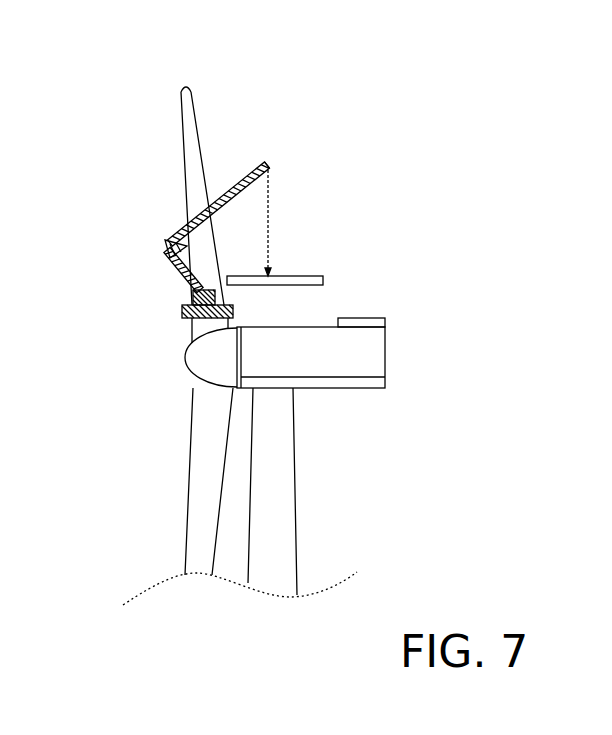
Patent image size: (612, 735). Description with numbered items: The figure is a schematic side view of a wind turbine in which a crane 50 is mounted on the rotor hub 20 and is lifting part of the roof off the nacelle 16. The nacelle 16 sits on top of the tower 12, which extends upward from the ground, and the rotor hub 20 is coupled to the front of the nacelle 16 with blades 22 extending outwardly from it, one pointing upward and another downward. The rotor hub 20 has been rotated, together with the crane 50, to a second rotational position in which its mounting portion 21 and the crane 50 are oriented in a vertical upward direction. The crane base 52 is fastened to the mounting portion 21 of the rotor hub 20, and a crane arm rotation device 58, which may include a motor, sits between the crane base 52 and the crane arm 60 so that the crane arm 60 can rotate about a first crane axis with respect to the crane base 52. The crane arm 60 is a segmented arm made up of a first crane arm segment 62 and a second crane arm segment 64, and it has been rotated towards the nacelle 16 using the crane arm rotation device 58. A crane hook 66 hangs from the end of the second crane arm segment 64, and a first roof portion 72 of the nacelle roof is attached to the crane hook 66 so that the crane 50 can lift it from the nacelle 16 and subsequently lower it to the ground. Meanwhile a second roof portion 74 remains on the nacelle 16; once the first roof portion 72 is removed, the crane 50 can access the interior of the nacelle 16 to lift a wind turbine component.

The tower 12 is at (297, 545).
The nacelle 16 is at (387, 358).
The rotor hub 20 is at (190, 375).
The mounting portion 21 is at (203, 339).
The blade 22 is at (178, 107).
The crane 50 is at (138, 228).
The crane base 52 is at (185, 308).
The crane arm rotation device 58 is at (193, 293).
The crane arm 60 is at (235, 159).
The first crane arm segment 62 is at (175, 267).
The second crane arm segment 64 is at (270, 167).
The crane hook 66 is at (272, 270).
The first roof portion 72 is at (318, 275).
The second roof portion 74 is at (375, 317).